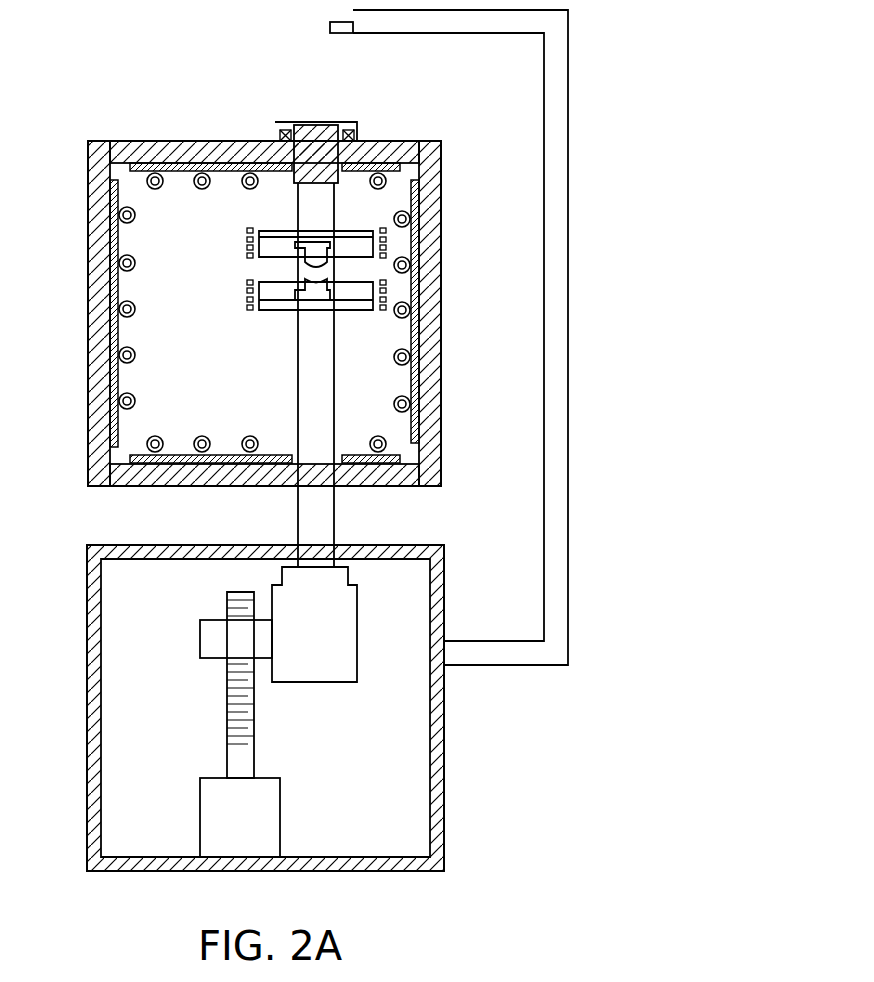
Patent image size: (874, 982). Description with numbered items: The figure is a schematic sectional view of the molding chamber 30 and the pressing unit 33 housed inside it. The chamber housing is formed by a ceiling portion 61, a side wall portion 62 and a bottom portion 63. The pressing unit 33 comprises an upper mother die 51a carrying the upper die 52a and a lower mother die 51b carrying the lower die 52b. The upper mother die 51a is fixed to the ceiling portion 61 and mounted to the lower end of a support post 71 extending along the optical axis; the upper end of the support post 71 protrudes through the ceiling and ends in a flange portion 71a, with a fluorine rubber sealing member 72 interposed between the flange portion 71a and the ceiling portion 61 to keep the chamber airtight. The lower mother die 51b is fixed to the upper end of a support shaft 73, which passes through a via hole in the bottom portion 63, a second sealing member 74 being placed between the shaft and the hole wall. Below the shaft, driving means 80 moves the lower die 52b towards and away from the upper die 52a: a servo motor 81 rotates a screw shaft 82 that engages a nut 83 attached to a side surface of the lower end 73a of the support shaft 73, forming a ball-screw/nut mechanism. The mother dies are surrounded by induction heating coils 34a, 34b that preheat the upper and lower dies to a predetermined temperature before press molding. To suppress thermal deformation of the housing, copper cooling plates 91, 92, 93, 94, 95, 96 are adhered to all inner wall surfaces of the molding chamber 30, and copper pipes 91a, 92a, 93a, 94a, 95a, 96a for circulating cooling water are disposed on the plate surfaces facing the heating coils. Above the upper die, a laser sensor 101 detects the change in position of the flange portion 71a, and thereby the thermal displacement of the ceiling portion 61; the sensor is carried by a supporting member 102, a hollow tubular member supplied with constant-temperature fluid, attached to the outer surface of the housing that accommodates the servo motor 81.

The molding chamber 30 is at (130, 140).
The pressing unit 33 is at (386, 312).
The induction heating coil 34a is at (246, 247).
The induction heating coil 34b is at (246, 296).
The upper mother die 51a is at (360, 240).
The lower mother die 51b is at (366, 292).
The upper die 52a is at (318, 258).
The lower die 52b is at (312, 300).
The ceiling portion 61 is at (198, 160).
The side wall portion 62 is at (100, 213).
The bottom portion 63 is at (122, 486).
The support post 71 is at (316, 160).
The flange portion 71a is at (330, 122).
The sealing member 72 is at (354, 134).
The support shaft 73 is at (298, 376).
The lower end 73a is at (335, 612).
The sealing member 74 is at (336, 466).
The driving means 80 is at (165, 737).
The servo motor 81 is at (215, 820).
The screw shaft 82 is at (228, 692).
The nut 83 is at (205, 640).
The cooling plate 91 is at (238, 163).
The copper pipe 91a is at (200, 190).
The cooling plate 92 is at (116, 326).
The copper pipe 92a is at (118, 362).
The cooling plate 93 is at (226, 455).
The copper pipe 93a is at (157, 452).
The cooling plate 94 is at (354, 455).
The copper pipe 94a is at (384, 448).
The cooling plate 95 is at (418, 290).
The copper pipe 95a is at (406, 404).
The cooling plate 96 is at (372, 162).
The copper pipe 96a is at (392, 186).
The laser sensor 101 is at (330, 28).
The supporting member 102 is at (508, 658).